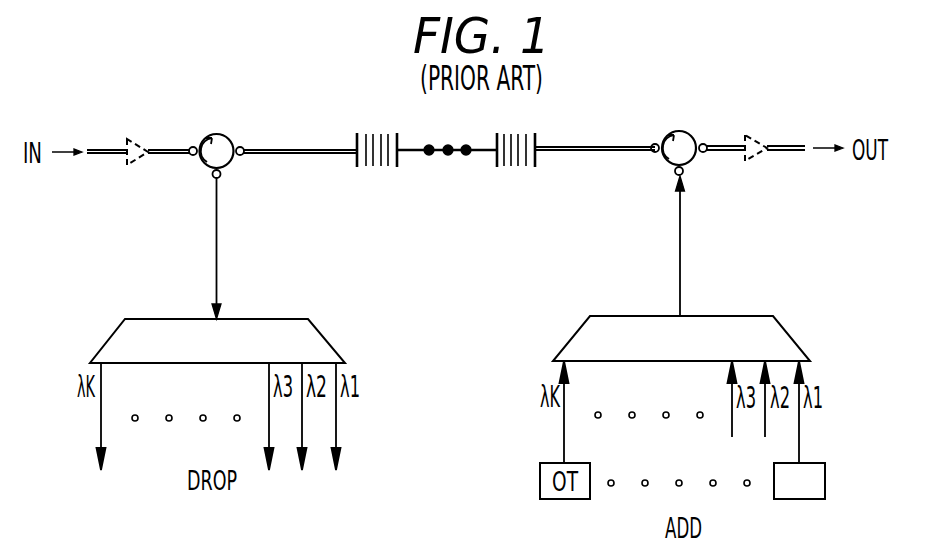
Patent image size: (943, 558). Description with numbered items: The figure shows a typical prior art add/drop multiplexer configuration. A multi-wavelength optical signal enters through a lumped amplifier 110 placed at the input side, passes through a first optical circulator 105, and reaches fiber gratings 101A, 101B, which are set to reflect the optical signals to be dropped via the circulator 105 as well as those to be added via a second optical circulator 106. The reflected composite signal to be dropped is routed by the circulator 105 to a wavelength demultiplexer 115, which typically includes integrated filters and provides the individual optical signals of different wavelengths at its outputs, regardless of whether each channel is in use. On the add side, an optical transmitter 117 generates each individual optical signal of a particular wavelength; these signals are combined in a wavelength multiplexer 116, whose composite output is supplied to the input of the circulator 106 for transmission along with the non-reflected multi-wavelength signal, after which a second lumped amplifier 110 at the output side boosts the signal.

The fiber grating 101A is at (381, 168).
The fiber grating 101B is at (521, 168).
The optical circulator 105 is at (218, 133).
The optical circulator 106 is at (681, 130).
The lumped amplifier 110 is at (140, 138).
The wavelength demultiplexer 115 is at (104, 343).
The wavelength multiplexer 116 is at (567, 340).
The optical transmitter 117 is at (826, 477).